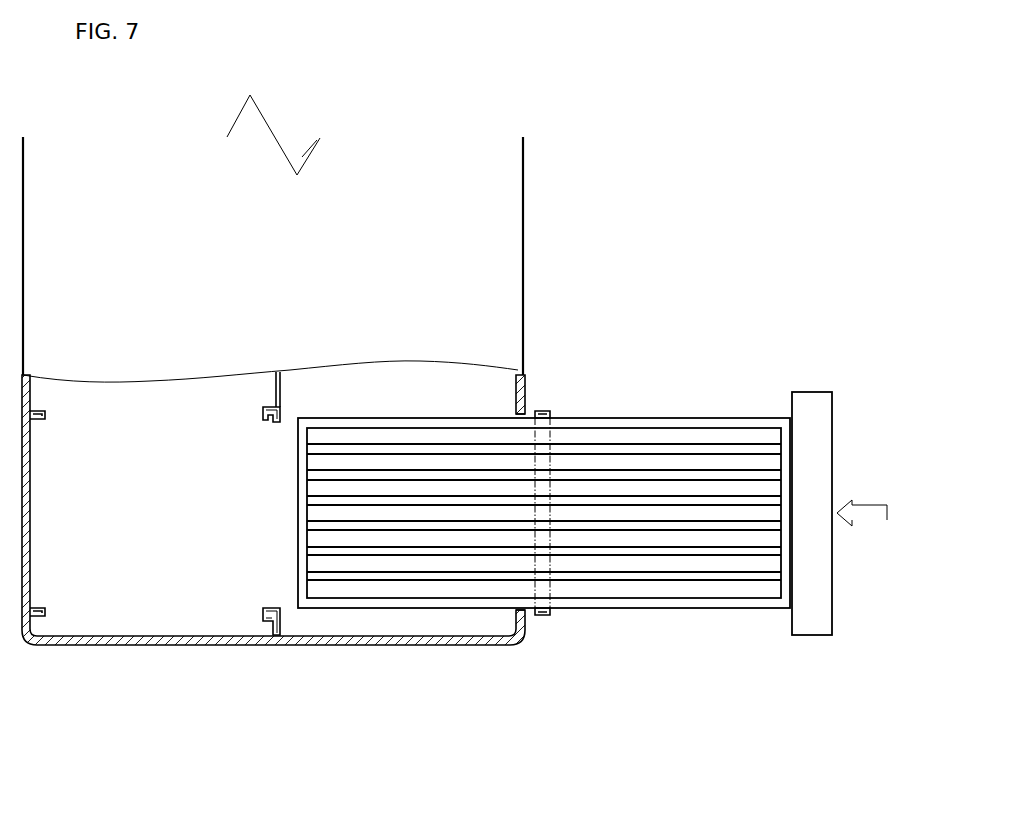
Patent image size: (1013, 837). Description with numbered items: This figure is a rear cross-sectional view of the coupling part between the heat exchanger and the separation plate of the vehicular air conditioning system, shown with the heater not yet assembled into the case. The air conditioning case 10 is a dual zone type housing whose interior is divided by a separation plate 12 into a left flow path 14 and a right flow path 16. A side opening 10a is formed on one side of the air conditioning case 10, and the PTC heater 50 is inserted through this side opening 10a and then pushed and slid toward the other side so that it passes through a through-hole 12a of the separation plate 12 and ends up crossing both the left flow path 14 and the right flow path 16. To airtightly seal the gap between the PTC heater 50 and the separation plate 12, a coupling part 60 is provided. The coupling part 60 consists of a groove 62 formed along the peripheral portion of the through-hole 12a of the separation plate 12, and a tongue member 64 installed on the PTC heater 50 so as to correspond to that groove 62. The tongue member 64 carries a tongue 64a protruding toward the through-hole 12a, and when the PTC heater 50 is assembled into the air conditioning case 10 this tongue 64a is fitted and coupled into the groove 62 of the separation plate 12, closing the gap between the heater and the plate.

The air conditioning case 10 is at (507, 191).
The side opening 10a is at (532, 413).
The separation plate 12 is at (278, 372).
The through-hole 12a is at (275, 427).
The left flow path 14 is at (153, 408).
The right flow path 16 is at (416, 408).
The PTC heater 50 is at (705, 416).
The coupling part 60 is at (547, 735).
The groove 62 is at (276, 613).
The tongue member 64 is at (543, 615).
The tongue 64a is at (535, 615).